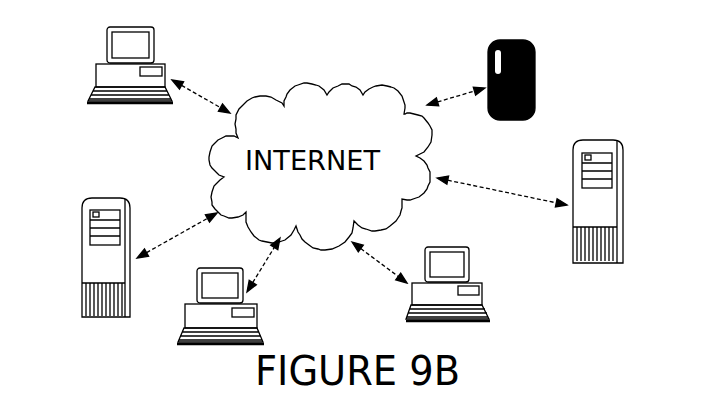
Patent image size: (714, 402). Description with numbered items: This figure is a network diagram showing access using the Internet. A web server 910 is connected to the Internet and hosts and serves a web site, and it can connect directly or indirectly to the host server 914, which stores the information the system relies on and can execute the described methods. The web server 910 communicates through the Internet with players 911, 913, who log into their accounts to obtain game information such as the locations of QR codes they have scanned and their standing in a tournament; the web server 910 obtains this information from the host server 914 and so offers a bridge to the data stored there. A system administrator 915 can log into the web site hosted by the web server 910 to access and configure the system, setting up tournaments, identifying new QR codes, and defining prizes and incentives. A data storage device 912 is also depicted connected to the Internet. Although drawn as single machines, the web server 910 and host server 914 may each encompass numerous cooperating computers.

The web server 910 is at (82, 273).
The player 911 is at (92, 76).
The data storage device 912 is at (484, 80).
The player 913 is at (405, 314).
The host server 914 is at (570, 229).
The system administrator 915 is at (174, 349).